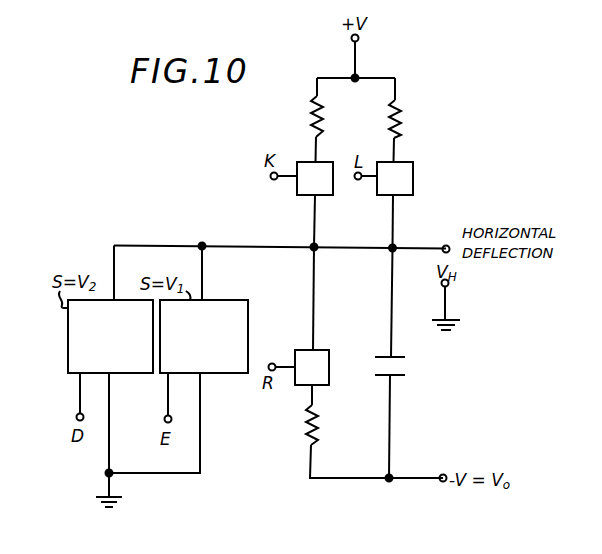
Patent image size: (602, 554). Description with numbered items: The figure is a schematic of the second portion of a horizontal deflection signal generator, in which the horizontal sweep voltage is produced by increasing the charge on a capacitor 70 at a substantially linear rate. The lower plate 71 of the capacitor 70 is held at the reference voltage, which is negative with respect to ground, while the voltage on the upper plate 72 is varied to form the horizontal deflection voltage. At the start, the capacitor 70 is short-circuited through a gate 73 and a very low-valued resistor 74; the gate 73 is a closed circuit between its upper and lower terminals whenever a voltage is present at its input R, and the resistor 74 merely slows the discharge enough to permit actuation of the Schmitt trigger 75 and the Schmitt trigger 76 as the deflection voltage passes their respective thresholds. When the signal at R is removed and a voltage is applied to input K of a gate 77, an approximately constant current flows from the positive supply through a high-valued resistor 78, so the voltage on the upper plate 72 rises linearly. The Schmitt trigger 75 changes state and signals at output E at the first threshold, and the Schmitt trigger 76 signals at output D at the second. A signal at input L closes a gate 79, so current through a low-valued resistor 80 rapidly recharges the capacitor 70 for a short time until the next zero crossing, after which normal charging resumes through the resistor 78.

The capacitor 70 is at (417, 371).
The lower plate 71 is at (400, 378).
The upper plate 72 is at (396, 356).
The gate 73 is at (330, 362).
The resistor 74 is at (316, 429).
The Schmitt trigger 75 is at (222, 374).
The Schmitt trigger 76 is at (128, 374).
The gate 77 is at (321, 196).
The resistor 78 is at (329, 108).
The gate 79 is at (413, 189).
The resistor 80 is at (399, 110).